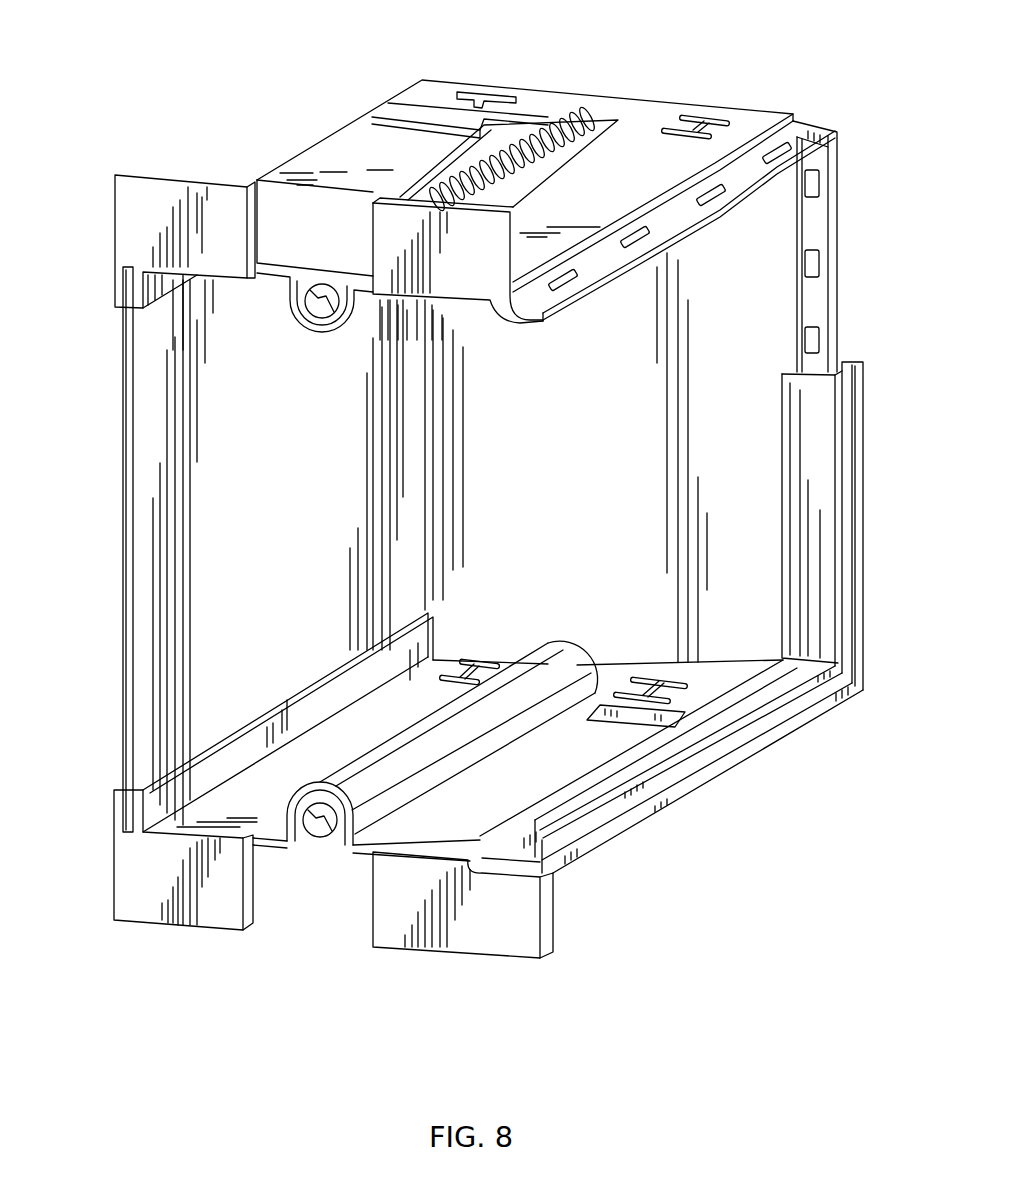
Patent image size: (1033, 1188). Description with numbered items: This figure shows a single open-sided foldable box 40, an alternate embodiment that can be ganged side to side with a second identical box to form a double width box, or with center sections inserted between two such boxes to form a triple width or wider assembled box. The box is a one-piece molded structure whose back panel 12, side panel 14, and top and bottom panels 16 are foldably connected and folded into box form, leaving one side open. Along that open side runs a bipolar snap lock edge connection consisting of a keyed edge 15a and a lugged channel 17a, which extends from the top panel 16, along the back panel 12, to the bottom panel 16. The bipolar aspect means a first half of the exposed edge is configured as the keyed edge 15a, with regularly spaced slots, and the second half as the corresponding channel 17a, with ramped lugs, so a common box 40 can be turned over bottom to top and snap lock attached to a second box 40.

The single open-sided foldable box 40 is at (318, 33).
The top and bottom panels 16 is at (640, 118).
The side panel 14 is at (210, 480).
The back panel 12 is at (594, 468).
The bipolar keyed edge 15a is at (840, 200).
The lugged channel 17a is at (863, 510).